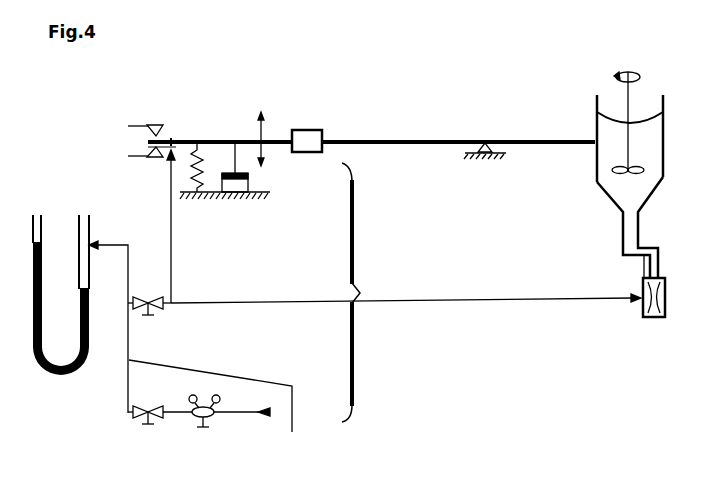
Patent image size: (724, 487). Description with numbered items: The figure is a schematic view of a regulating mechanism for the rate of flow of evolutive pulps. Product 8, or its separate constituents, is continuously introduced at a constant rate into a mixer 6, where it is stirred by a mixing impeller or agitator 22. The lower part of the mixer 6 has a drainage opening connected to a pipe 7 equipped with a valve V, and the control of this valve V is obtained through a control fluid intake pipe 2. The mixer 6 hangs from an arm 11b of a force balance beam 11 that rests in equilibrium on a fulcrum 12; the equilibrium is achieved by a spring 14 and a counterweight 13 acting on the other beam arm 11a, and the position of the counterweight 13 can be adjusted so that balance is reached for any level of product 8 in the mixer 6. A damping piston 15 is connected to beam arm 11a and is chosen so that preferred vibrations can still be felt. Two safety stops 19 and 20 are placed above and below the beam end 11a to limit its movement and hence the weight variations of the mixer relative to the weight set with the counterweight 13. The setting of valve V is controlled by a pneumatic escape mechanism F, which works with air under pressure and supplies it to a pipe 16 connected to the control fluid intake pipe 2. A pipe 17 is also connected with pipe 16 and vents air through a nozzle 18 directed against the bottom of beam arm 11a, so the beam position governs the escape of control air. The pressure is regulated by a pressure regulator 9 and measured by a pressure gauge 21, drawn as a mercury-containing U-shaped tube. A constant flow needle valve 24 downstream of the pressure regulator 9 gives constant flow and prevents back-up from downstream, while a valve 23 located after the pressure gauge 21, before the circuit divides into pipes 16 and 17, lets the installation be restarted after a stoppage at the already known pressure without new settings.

The force balance beam 11 is at (411, 130).
The beam arm 11a is at (171, 140).
The arm 11b is at (562, 139).
The fulcrum 12 is at (489, 141).
The counterweight 13 is at (303, 130).
The spring 14 is at (200, 142).
The damping piston 15 is at (250, 180).
The pipe 16 is at (217, 409).
The pipe 17 is at (172, 237).
The nozzle 18 is at (168, 161).
The safety stop 19 is at (151, 127).
The safety stop 20 is at (151, 153).
The pressure gauge 21 is at (72, 372).
The mixing impeller 22 is at (625, 174).
The valve 23 is at (158, 308).
The constant flow needle valve 24 is at (141, 424).
The control fluid intake pipe 2 is at (640, 300).
The mixer 6 is at (663, 182).
The pipe 7 is at (652, 266).
The product 8 is at (643, 132).
The pressure regulator 9 is at (200, 421).
The valve V is at (656, 318).
The pneumatic escape mechanism F is at (402, 292).